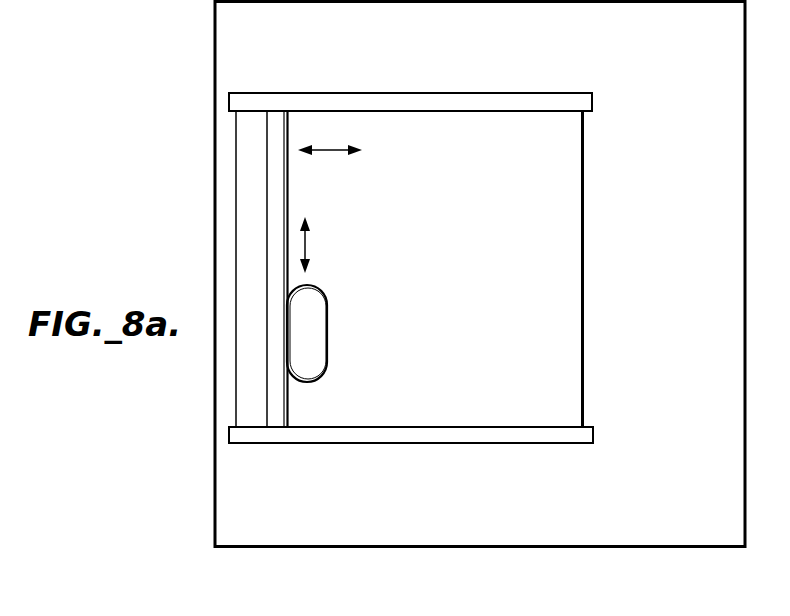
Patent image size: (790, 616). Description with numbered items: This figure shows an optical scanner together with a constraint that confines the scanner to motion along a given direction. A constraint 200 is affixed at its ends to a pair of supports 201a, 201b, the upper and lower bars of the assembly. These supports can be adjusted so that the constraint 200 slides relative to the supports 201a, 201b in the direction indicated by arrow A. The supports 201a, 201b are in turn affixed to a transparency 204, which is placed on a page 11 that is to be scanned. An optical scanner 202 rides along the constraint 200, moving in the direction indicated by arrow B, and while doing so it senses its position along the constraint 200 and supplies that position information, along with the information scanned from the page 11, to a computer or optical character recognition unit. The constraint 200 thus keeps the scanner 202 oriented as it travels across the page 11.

The page 11 is at (677, 537).
The constraint 200 is at (279, 197).
The support 201a is at (414, 103).
The support 201b is at (397, 435).
The optical scanner 202 is at (313, 327).
The transparency 204 is at (569, 281).
The arrow A is at (333, 150).
The arrow B is at (306, 248).